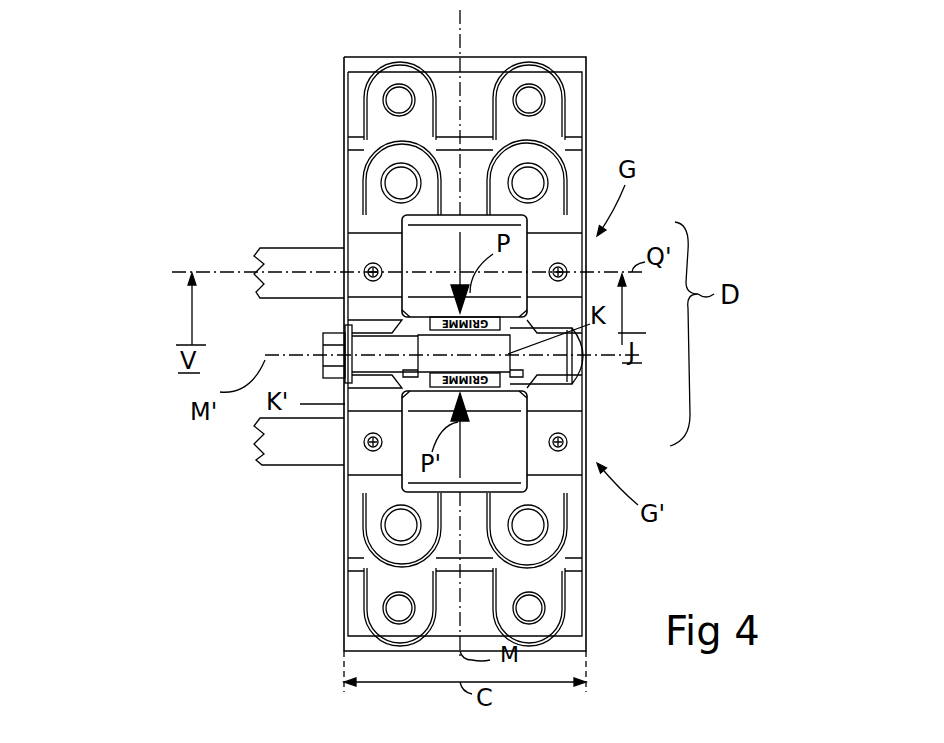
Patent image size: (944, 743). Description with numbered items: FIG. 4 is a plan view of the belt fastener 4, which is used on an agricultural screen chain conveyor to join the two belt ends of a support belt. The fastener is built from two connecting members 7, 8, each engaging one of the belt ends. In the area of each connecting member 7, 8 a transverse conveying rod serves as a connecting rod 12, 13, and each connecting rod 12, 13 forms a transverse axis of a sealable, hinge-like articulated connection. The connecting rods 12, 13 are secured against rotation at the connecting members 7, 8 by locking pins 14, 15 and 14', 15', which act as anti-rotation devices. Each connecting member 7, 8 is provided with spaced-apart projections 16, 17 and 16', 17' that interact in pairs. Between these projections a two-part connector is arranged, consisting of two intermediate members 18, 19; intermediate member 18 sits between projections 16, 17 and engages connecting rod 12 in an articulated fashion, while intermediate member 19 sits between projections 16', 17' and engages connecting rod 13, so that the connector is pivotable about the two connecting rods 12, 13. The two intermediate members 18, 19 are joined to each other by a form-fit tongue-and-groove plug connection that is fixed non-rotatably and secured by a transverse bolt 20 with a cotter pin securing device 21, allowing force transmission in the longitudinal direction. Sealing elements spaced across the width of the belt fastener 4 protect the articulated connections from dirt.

The belt fastener 4 is at (672, 71).
The connecting member 7 is at (344, 112).
The connecting member 8 is at (344, 600).
The connecting rod 12 is at (268, 257).
The connecting rod 13 is at (268, 455).
The locking pin 14 is at (331, 239).
The locking pin 14' is at (324, 485).
The locking pin 15 is at (610, 239).
The locking pin 15' is at (600, 491).
The projection 16 is at (322, 286).
The projection 16' is at (332, 505).
The projection 17 is at (586, 199).
The projection 17' is at (595, 499).
The intermediate member 18 is at (428, 252).
The intermediate member 19 is at (509, 428).
The transverse bolt 20 is at (586, 368).
The cotter pin securing device 21 is at (332, 346).